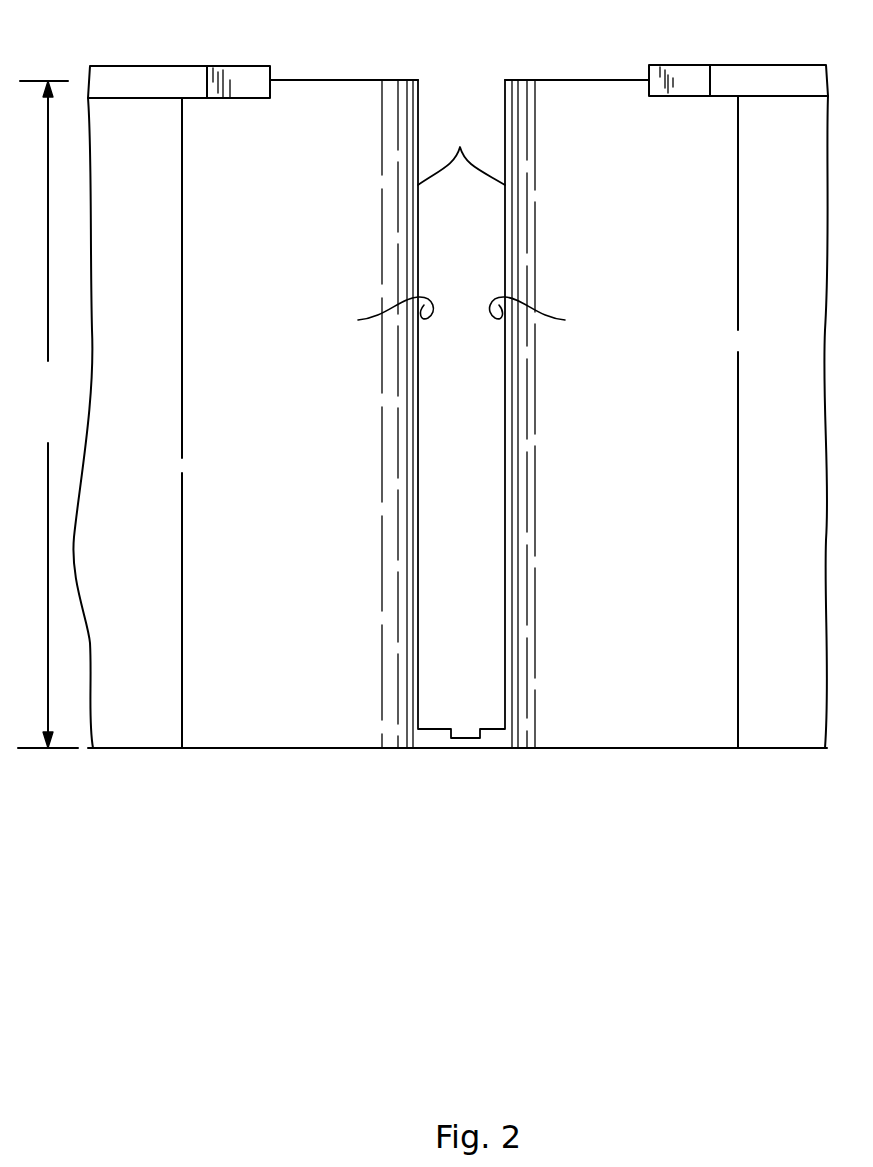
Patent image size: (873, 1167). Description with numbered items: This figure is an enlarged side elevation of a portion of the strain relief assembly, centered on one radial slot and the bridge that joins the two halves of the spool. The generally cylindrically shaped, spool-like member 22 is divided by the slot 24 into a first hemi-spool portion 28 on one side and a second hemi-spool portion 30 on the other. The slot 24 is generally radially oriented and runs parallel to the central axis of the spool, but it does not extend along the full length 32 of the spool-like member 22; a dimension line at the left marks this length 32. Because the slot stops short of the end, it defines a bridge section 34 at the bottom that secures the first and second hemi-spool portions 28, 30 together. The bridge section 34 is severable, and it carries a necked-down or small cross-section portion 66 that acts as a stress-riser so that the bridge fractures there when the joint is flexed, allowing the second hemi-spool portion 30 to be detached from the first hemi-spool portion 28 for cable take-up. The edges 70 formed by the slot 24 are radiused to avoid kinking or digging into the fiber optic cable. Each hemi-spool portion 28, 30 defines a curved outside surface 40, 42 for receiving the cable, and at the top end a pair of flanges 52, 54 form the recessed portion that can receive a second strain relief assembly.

The spool-like member 22 is at (152, 66).
The slot 24 is at (461, 148).
The first hemi-spool portion 28 is at (348, 80).
The second hemi-spool portion 30 is at (557, 80).
The length 32 is at (48, 414).
The bridge section 34 is at (437, 748).
The curved outside surface 40 is at (290, 464).
The curved outside surface 42 is at (645, 462).
The flange 52 is at (205, 98).
The flange 54 is at (724, 96).
The necked-down portion 66 is at (466, 728).
The radiused edge 70 is at (464, 317).